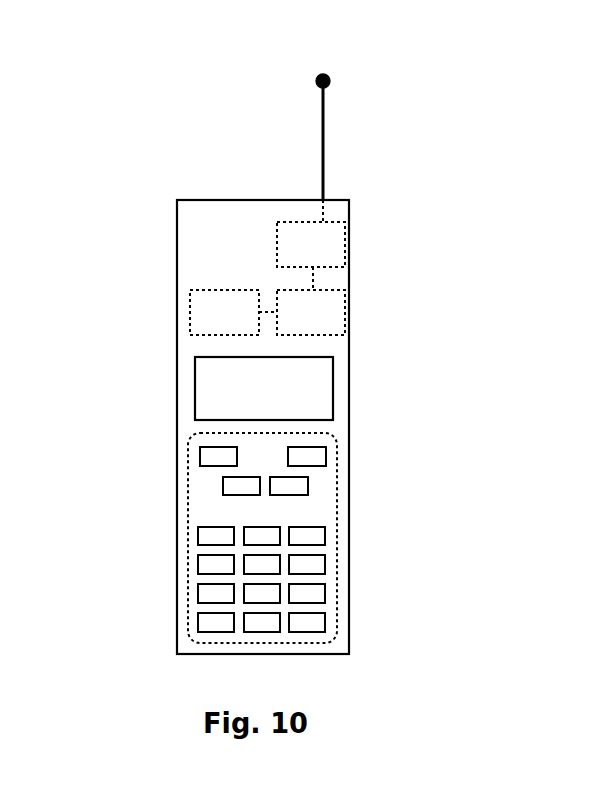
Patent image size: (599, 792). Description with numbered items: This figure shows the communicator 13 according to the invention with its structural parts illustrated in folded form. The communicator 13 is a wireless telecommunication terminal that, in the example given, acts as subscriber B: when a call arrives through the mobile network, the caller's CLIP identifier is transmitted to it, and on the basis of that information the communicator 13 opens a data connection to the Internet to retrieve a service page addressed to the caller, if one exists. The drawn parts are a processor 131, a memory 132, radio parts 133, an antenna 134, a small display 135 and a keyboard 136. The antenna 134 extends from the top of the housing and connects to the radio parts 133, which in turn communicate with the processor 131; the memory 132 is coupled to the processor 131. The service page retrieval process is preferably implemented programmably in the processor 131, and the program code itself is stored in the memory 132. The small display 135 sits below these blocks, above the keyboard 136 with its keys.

The communicator 13 is at (63, 467).
The processor 131 is at (345, 315).
The memory 132 is at (190, 317).
The radio parts 133 is at (345, 253).
The antenna 134 is at (323, 170).
The small display 135 is at (333, 390).
The keyboard 136 is at (337, 472).